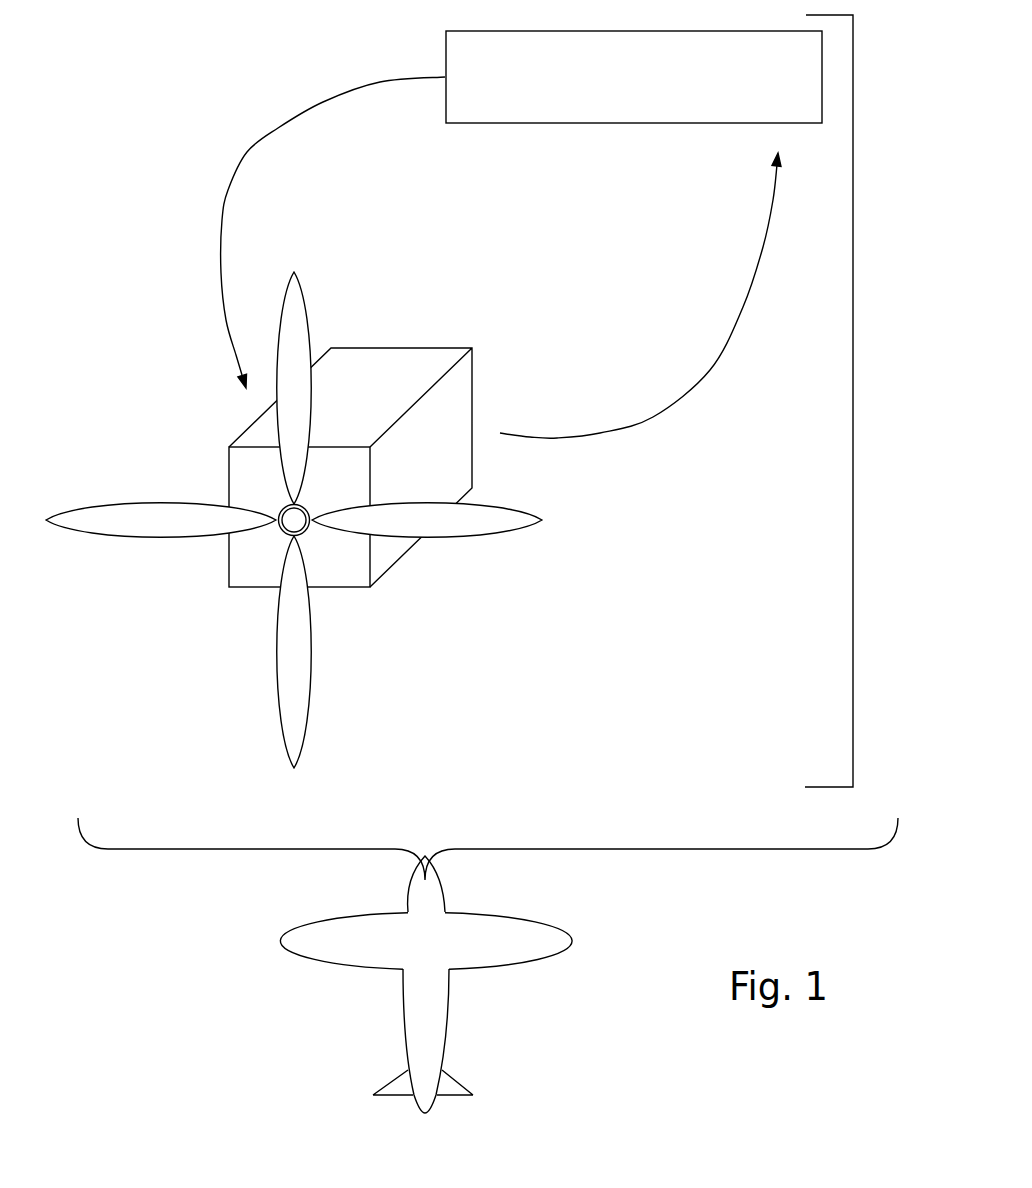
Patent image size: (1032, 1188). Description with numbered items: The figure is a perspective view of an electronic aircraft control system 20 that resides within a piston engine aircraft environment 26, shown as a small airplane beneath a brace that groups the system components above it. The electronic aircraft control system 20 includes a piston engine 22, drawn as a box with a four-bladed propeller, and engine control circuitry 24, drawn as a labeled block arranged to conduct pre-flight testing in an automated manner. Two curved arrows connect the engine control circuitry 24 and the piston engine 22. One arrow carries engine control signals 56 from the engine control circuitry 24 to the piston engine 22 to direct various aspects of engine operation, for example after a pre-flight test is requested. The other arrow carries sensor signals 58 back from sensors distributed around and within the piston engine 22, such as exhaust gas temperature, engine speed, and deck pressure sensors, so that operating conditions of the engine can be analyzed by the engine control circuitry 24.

The electronic aircraft control system 20 is at (853, 416).
The piston engine 22 is at (416, 346).
The engine control circuitry 24 is at (723, 62).
The piston engine aircraft environment 26 is at (308, 957).
The engine control signals 56 is at (247, 152).
The sensor signals 58 is at (710, 370).